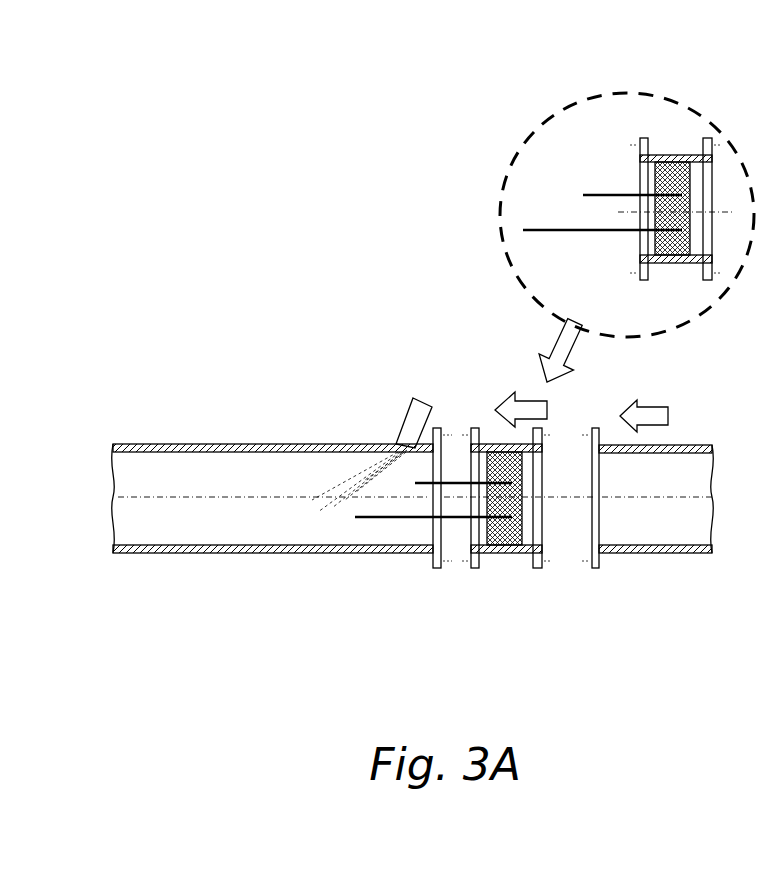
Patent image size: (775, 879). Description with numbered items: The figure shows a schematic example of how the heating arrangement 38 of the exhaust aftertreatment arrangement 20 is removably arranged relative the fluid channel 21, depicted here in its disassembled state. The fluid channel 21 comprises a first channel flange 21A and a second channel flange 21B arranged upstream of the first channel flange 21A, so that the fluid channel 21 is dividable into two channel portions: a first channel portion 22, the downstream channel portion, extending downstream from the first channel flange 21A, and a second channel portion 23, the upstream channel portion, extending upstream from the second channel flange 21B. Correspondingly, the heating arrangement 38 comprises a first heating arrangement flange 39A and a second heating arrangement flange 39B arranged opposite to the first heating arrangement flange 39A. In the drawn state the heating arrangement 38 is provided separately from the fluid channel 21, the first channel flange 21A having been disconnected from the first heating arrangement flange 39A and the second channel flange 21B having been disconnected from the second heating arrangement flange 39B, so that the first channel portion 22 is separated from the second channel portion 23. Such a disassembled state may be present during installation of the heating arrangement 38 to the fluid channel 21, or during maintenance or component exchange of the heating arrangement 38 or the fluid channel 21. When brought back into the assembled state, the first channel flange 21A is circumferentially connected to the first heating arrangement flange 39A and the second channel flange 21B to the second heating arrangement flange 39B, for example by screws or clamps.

The exhaust aftertreatment arrangement 20 is at (428, 200).
The fluid channel 21 is at (292, 438).
The first channel flange 21A is at (435, 568).
The second channel flange 21B is at (595, 568).
The first channel portion 22 is at (272, 553).
The second channel portion 23 is at (665, 553).
The heating arrangement 38 is at (502, 582).
The first heating arrangement flange 39A is at (470, 428).
The second heating arrangement flange 39B is at (541, 432).